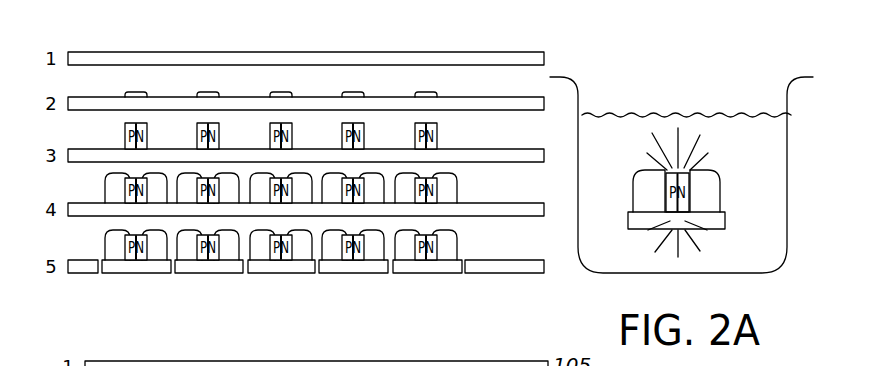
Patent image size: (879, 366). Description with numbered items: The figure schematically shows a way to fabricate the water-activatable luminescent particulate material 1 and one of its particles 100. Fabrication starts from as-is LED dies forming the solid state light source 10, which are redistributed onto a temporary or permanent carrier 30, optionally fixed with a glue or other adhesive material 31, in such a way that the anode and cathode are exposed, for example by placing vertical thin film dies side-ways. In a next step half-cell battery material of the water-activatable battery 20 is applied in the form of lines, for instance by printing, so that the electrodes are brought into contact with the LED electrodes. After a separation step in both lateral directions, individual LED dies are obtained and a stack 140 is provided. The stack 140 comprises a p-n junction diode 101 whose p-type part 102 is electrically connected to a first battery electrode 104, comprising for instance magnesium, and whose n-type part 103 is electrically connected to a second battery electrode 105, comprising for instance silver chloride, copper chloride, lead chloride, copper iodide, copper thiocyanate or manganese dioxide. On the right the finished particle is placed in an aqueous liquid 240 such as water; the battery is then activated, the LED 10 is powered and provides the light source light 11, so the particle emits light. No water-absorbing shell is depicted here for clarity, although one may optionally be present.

The water-activatable luminescent particulate material 1 is at (333, 277).
The solid state light source 10 is at (122, 127).
The light source light 11 is at (687, 150).
The water-activatable battery 20 is at (222, 277).
The carrier 30 is at (80, 52).
The adhesive material 31 is at (133, 96).
The particle 100 is at (420, 277).
The p-n junction diode 101 is at (137, 120).
The p-type part 102 is at (125, 137).
The n-type part 103 is at (215, 124).
The first battery electrode 104 is at (397, 173).
The second battery electrode 105 is at (443, 182).
The stack 140 is at (158, 277).
The aqueous liquid 240 is at (602, 257).